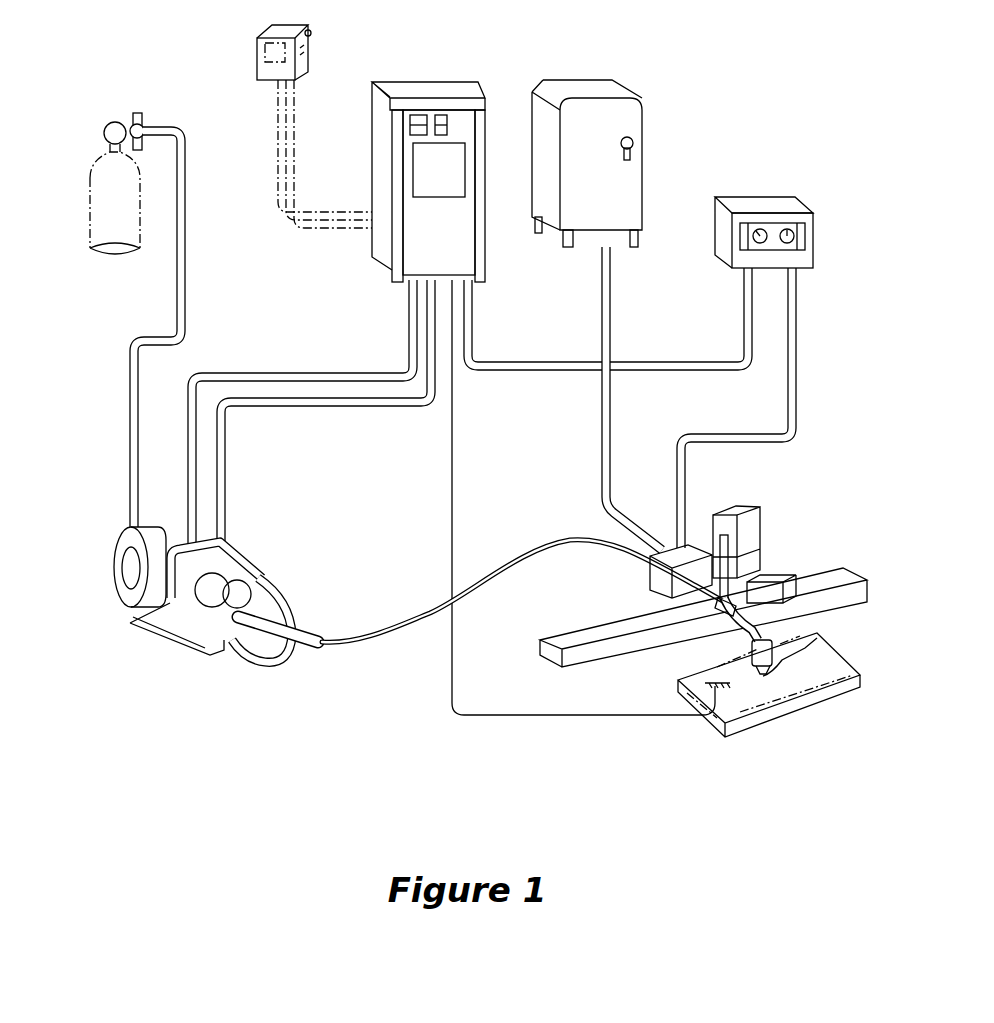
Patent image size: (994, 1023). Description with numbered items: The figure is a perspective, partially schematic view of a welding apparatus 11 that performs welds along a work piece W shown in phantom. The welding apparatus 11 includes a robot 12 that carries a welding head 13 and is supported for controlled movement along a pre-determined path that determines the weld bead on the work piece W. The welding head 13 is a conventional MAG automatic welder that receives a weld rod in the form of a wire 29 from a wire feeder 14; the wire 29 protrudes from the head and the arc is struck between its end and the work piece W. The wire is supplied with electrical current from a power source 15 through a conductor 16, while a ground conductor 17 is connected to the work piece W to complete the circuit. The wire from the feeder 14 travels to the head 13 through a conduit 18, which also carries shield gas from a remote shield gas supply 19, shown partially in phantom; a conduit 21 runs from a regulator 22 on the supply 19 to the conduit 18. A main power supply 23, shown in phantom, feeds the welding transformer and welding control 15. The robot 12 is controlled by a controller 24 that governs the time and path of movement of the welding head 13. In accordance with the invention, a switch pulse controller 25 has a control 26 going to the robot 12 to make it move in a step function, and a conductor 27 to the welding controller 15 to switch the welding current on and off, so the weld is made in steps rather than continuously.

The welding apparatus 11 is at (412, 703).
The robot 12 is at (764, 537).
The welding head 13 is at (773, 650).
The wire feeder 14 is at (163, 640).
The power source 15 is at (430, 82).
The conductor 16 is at (327, 372).
The ground conductor 17 is at (587, 717).
The conduit 18 is at (357, 657).
The shield gas supply 19 is at (88, 197).
The conduit 21 is at (126, 447).
The regulator 22 is at (143, 123).
The main power supply 23 is at (255, 53).
The controller 24 is at (643, 128).
The switch pulse controller 25 is at (760, 197).
The control 26 is at (798, 382).
The conductor 27 is at (702, 365).
The weld rod or wire 29 is at (775, 664).
The work piece W is at (793, 717).